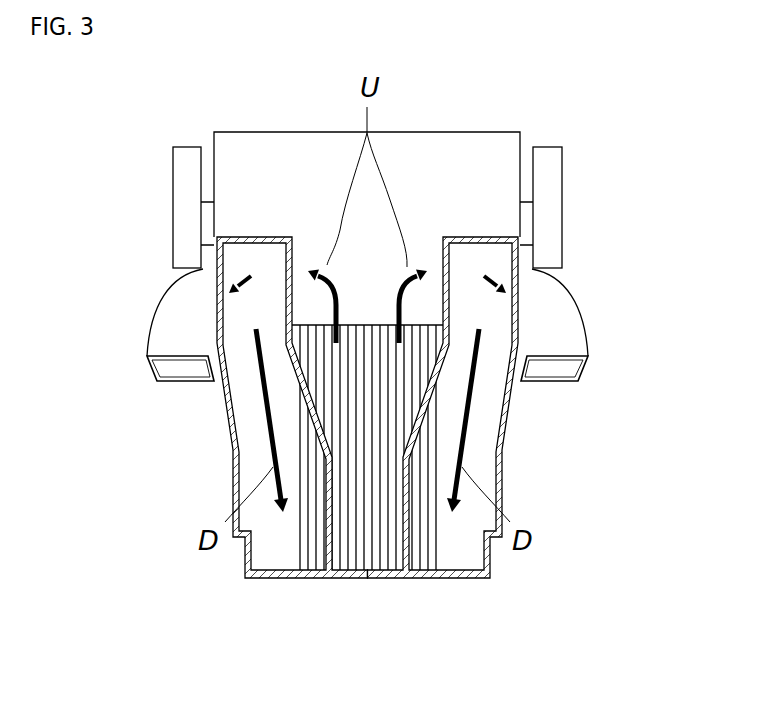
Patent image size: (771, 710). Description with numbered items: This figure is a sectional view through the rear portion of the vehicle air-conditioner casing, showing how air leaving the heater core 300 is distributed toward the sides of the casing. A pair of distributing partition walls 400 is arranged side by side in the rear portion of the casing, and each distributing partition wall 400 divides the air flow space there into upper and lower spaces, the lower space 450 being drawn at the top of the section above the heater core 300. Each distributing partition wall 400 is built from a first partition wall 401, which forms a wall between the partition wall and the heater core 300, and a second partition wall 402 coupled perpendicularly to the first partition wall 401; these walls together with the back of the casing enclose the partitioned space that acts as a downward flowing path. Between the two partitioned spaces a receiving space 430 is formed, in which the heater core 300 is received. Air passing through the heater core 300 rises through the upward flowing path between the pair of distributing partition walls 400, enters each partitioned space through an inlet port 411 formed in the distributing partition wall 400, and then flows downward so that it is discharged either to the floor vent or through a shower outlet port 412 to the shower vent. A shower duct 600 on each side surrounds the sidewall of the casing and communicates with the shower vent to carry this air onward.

The heater core 300 is at (365, 510).
The distributing partition wall 400 is at (141, 447).
The first partition wall 401 is at (312, 406).
The second partition wall 402 is at (257, 247).
The inlet port 411 is at (292, 282).
The shower outlet port 412 is at (220, 290).
The receiving space 430 is at (433, 300).
The lower space 450 is at (482, 167).
The shower duct 600 is at (165, 337).